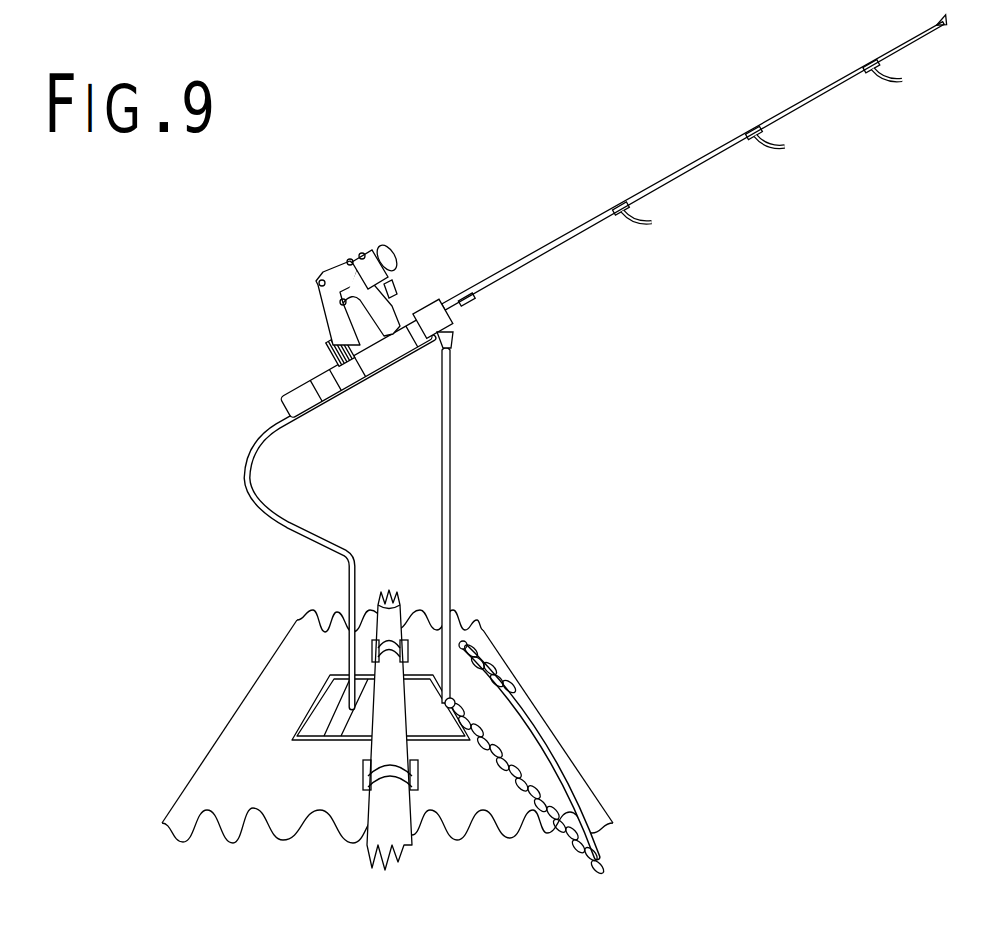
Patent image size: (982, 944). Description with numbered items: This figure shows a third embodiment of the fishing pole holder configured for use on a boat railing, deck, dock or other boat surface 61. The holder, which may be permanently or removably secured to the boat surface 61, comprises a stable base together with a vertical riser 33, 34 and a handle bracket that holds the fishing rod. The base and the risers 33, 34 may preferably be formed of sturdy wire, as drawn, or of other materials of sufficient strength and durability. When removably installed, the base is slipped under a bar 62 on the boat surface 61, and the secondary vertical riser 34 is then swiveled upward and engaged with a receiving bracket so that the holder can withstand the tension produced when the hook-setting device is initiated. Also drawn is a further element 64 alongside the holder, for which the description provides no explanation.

The support arm 33 is at (253, 466).
The support rod 34 is at (452, 503).
The ground surface 61 is at (278, 697).
The stake 62 is at (388, 792).
The anchor chain 64 is at (457, 708).